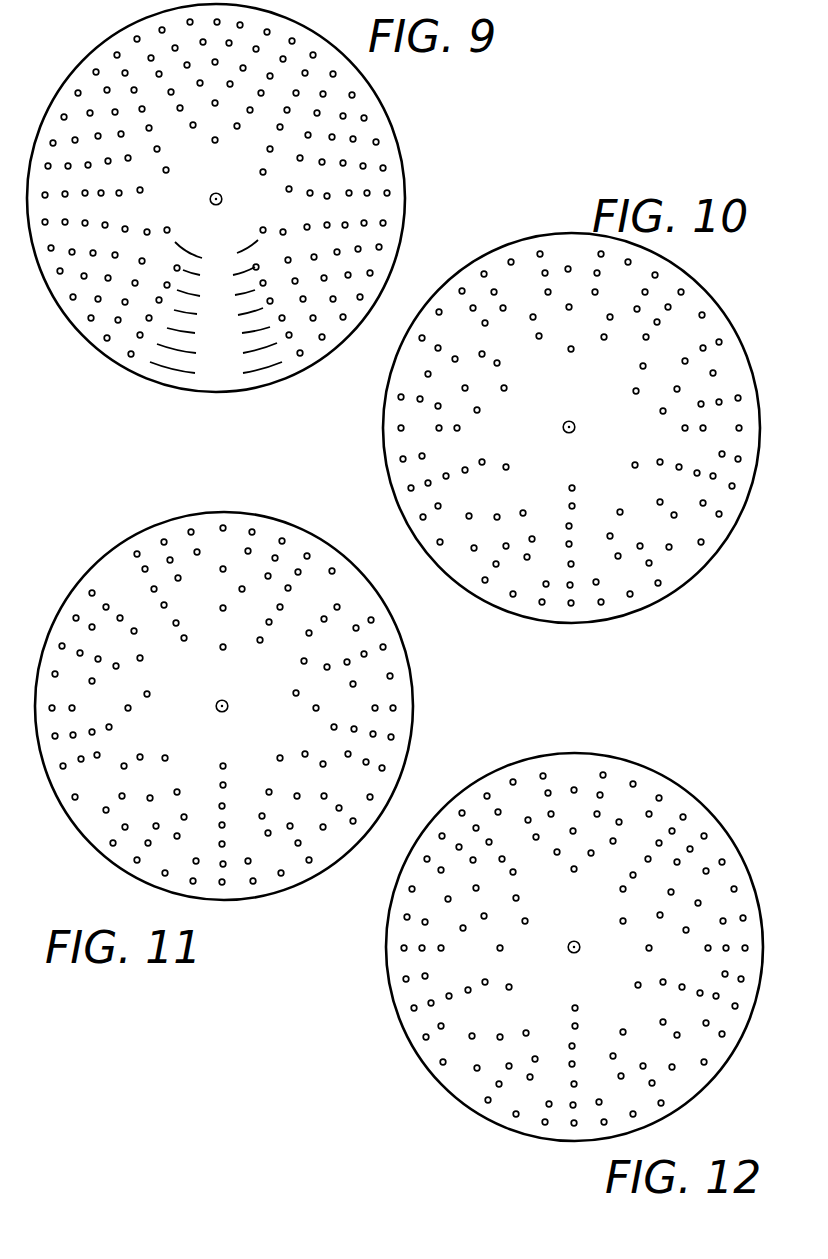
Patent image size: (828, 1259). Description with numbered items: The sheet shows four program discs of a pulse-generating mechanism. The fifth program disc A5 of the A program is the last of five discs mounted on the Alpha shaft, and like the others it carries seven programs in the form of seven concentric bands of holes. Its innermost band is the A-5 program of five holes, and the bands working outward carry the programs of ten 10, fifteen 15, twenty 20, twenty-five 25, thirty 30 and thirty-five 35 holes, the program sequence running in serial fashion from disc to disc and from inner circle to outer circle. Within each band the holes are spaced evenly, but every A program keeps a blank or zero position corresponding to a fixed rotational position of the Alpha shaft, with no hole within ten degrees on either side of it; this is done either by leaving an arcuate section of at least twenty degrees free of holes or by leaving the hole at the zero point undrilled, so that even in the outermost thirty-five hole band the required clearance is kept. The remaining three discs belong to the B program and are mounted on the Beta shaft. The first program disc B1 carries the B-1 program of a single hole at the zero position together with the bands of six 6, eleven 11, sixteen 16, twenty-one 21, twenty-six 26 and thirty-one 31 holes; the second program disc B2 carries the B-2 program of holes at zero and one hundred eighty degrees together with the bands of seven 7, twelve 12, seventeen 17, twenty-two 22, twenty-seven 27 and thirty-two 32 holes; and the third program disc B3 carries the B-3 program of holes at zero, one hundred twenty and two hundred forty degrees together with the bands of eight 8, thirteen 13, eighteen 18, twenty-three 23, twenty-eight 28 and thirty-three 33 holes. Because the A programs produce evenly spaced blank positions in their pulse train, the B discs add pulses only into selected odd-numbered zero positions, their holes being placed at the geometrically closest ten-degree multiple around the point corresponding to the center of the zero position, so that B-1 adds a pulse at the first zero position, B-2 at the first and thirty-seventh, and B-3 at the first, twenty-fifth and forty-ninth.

In FIG. 9, the fifth program disc of the A program A5 is at (242, 198).
In FIG. 9, the A-5 program A-5 is at (216, 253).
In FIG. 9, the A-10 program 10 is at (219, 275).
In FIG. 9, the A-15 program 15 is at (216, 296).
In FIG. 9, the A-20 program 20 is at (218, 315).
In FIG. 9, the A-25 program 25 is at (218, 334).
In FIG. 9, the A-30 program 30 is at (217, 352).
In FIG. 9, the A-35 program 35 is at (216, 372).
In FIG. 10, the first program disc of the B program B1 is at (577, 428).
In FIG. 10, the B-1 program B-1 is at (585, 488).
In FIG. 10, the B-6 program 6 is at (578, 506).
In FIG. 10, the B-11 program 11 is at (580, 526).
In FIG. 10, the B-16 program 16 is at (580, 544).
In FIG. 10, the B-21 program 21 is at (582, 564).
In FIG. 10, the B-26 program 26 is at (583, 585).
In FIG. 10, the B-31 program 31 is at (586, 603).
In FIG. 11, the second program disc of the B program B2 is at (221, 706).
In FIG. 11, the B-2 program B-2 is at (236, 766).
In FIG. 11, the B-7 program 7 is at (229, 785).
In FIG. 11, the B-12 program 12 is at (233, 806).
In FIG. 11, the B-17 program 17 is at (233, 825).
In FIG. 11, the B-22 program 22 is at (233, 844).
In FIG. 11, the B-27 program 27 is at (235, 864).
In FIG. 11, the B-32 program 32 is at (237, 882).
In FIG. 12, the third program disc of the B program B3 is at (575, 947).
In FIG. 12, the B-3 program B-3 is at (588, 1008).
In FIG. 12, the B-8 program 8 is at (581, 1026).
In FIG. 12, the B-13 program 13 is at (583, 1046).
In FIG. 12, the B-18 program 18 is at (583, 1064).
In FIG. 12, the B-23 program 23 is at (585, 1084).
In FIG. 12, the B-28 program 28 is at (586, 1105).
In FIG. 12, the B-33 program 33 is at (589, 1123).